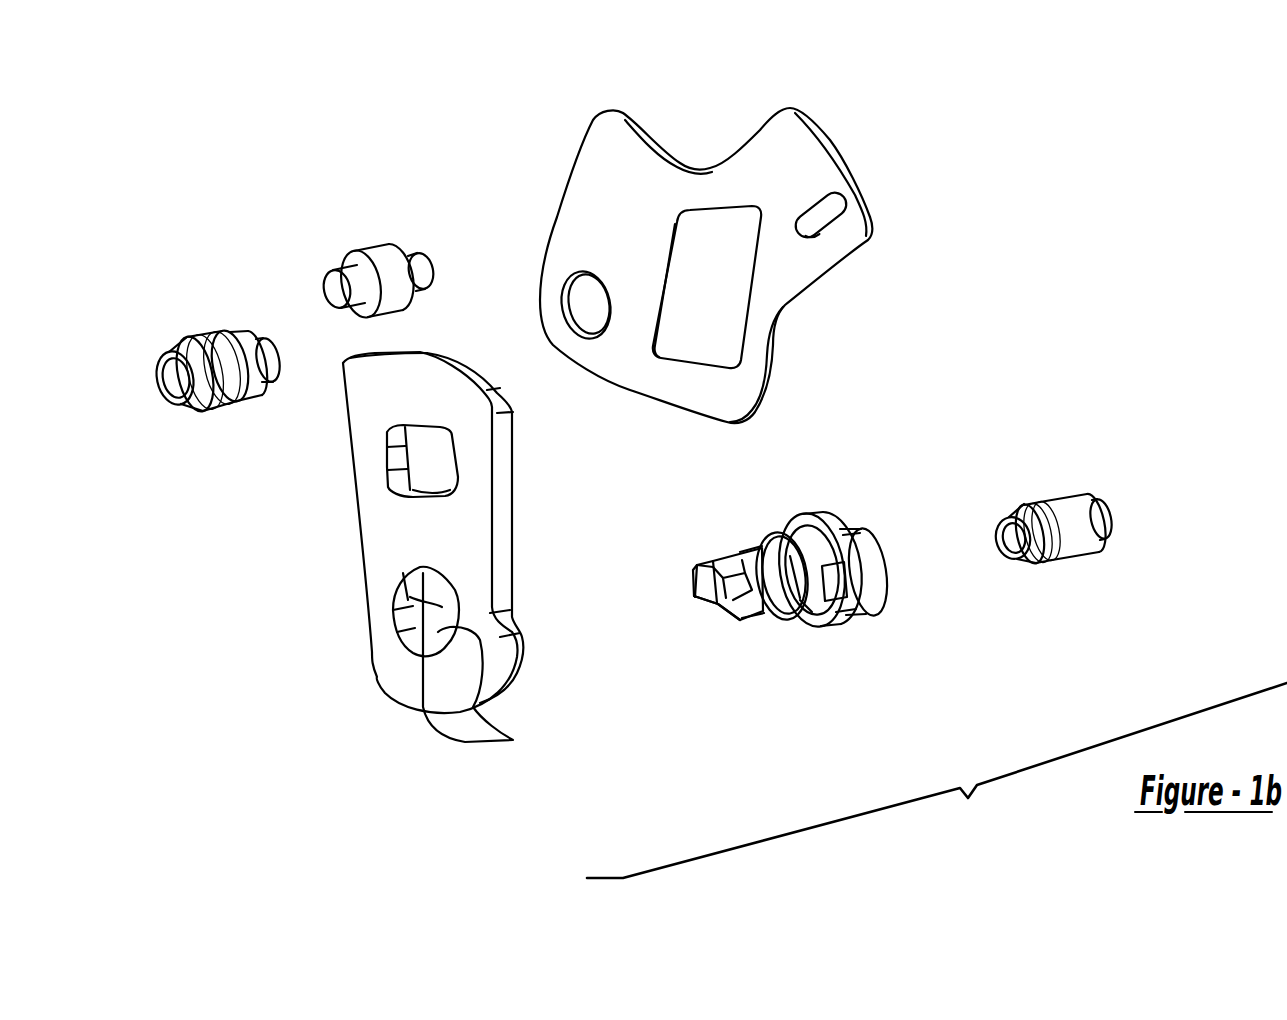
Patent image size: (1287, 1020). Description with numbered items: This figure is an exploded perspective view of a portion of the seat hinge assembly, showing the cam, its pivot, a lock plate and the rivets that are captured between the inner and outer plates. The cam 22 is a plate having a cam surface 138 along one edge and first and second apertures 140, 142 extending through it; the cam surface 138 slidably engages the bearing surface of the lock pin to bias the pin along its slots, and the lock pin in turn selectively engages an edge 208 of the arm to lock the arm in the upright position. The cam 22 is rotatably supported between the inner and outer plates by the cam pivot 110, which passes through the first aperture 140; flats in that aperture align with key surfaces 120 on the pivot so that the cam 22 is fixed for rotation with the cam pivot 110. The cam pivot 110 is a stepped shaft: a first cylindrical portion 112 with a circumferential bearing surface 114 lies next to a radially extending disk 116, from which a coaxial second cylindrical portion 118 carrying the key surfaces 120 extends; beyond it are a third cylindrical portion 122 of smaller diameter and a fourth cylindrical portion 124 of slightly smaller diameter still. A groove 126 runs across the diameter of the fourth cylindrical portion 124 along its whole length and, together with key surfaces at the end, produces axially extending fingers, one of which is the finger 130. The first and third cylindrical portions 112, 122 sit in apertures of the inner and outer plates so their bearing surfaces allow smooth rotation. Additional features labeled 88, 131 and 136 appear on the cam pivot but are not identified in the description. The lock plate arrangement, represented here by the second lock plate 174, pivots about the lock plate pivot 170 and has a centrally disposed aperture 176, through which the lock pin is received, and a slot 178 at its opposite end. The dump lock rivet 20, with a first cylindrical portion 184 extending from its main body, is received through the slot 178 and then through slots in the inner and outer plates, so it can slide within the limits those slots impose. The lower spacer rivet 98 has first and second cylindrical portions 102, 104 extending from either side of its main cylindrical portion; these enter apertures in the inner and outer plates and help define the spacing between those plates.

The dump lock rivet 20 is at (383, 243).
The cam 22 is at (404, 555).
The head notch 88 is at (707, 558).
The lower spacer rivet 98 is at (1080, 514).
The first cylindrical portion 102 is at (1030, 507).
The second cylindrical portion 104 is at (1107, 520).
The cam pivot 110 is at (835, 592).
The first cylindrical portion 112 is at (857, 543).
The circumferential bearing surface 114 is at (830, 585).
The radially extending disk 116 is at (860, 598).
The second cylindrical portion 118 is at (807, 533).
The key surfaces 120 is at (753, 547).
The third cylindrical portion 122 is at (805, 610).
The fourth cylindrical portion 124 is at (720, 567).
The groove 126 is at (717, 600).
The axially extending finger 130 is at (667, 558).
The spline 131 is at (800, 590).
The shaft 136 is at (723, 613).
The cam surface 138 is at (422, 358).
The first aperture 140 is at (380, 679).
The second aperture 142 is at (420, 467).
The lock plate pivot 170 is at (243, 405).
The second lock plate 174 is at (716, 163).
The centrally disposed aperture 176 is at (732, 292).
The slot 178 is at (837, 213).
The first cylindrical portion 184 is at (510, 740).
The edge 208 is at (672, 272).